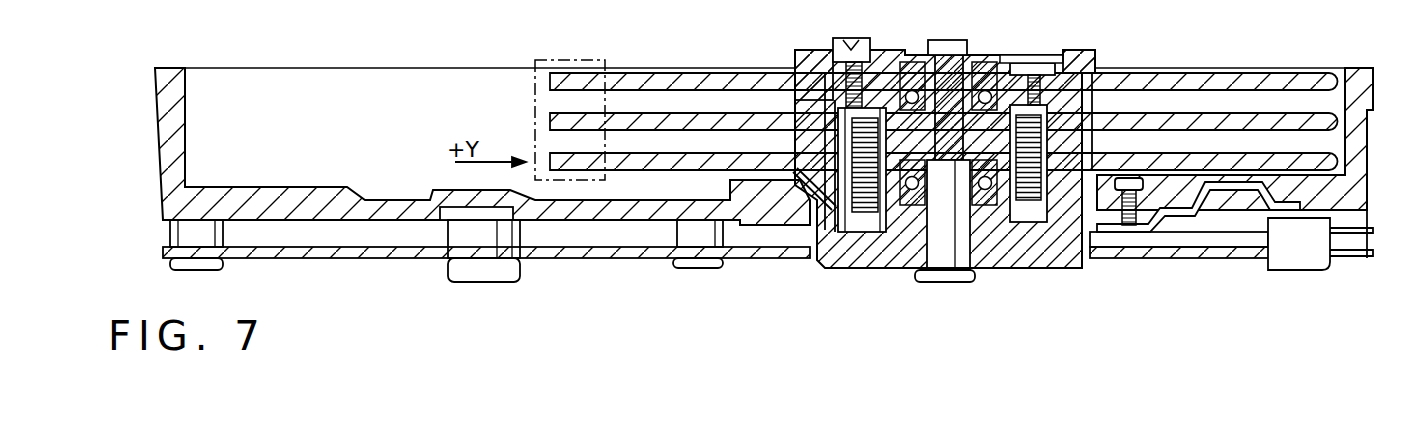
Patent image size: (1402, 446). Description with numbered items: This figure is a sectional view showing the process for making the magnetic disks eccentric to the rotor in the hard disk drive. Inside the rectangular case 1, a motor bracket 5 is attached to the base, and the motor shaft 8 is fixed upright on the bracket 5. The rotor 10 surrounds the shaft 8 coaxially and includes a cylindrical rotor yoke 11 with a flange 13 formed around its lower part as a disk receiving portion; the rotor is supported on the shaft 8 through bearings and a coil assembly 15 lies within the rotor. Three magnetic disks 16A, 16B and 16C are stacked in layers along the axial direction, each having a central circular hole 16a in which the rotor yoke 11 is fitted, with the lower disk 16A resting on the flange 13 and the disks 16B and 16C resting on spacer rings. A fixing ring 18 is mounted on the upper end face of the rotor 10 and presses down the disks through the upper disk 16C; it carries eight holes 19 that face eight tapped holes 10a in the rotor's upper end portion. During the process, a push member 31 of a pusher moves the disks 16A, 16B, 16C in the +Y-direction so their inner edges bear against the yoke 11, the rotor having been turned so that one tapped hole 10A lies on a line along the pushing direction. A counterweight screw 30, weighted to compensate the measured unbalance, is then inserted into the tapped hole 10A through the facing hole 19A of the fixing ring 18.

The case 1 is at (172, 180).
The motor bracket 5 is at (1002, 263).
The motor shaft 8 is at (940, 253).
The rotor 10 is at (877, 90).
The tapped hole 10A is at (838, 88).
The tapped holes 10a is at (1060, 55).
The rotor yoke 11 is at (830, 133).
The flange 13 is at (823, 190).
The coil 15 is at (863, 232).
The lower magnetic disk 16A is at (1237, 163).
The middle magnetic disk 16B is at (1293, 120).
The upper magnetic disk 16C is at (1218, 82).
The circular hole 16a is at (1093, 116).
The fixing ring 18 is at (1084, 50).
The holes 19 is at (1023, 58).
The hole 19A is at (840, 83).
The screw 30 is at (842, 38).
The push member 31 is at (535, 100).